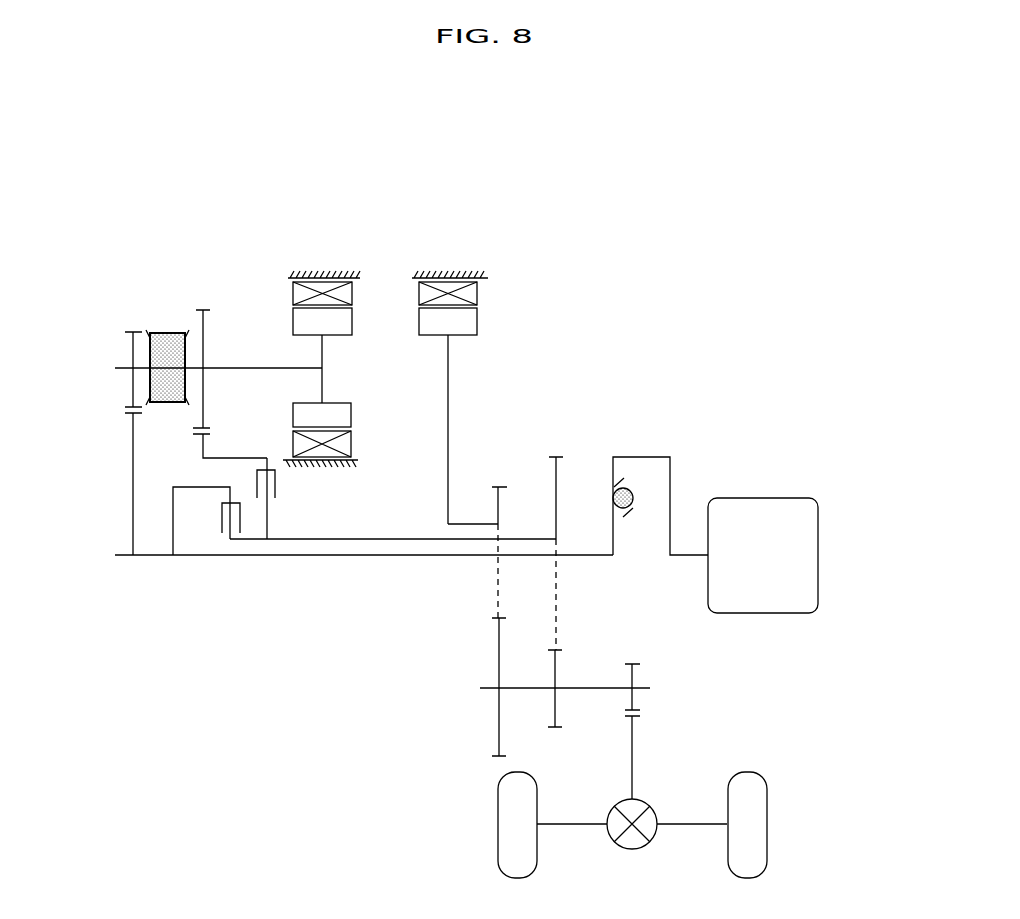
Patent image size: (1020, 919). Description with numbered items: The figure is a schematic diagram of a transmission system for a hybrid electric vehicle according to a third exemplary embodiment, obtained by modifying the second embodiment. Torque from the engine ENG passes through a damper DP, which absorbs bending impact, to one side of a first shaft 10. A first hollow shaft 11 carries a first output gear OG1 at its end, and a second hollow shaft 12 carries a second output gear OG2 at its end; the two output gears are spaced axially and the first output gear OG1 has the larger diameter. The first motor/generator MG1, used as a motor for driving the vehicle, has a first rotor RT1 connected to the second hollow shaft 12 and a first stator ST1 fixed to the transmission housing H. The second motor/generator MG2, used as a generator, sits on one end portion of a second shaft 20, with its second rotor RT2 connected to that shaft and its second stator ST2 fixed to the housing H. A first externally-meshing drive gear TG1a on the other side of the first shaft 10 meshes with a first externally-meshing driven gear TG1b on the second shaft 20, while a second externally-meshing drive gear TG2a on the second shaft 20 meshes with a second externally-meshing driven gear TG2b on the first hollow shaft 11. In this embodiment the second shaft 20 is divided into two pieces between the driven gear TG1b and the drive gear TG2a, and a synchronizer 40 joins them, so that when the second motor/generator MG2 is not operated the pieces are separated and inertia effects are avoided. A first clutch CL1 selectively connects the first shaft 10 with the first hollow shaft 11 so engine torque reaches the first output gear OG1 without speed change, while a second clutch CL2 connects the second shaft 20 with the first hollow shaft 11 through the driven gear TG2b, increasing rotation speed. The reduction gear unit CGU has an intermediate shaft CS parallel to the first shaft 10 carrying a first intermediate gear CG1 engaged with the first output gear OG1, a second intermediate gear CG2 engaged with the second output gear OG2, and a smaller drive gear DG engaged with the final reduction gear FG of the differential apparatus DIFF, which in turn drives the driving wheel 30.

The first shaft 10 is at (305, 559).
The first hollow shaft 11 is at (391, 542).
The second hollow shaft 12 is at (466, 527).
The second shaft 20 is at (140, 375).
The driving wheel 30 is at (497, 858).
The synchronizer 40 is at (160, 328).
The first externally-meshing drive gear TG1a is at (131, 530).
The first externally-meshing driven gear TG1b is at (131, 350).
The second externally-meshing drive gear TG2a is at (204, 352).
The second externally-meshing driven gear TG2b is at (203, 442).
The first motor/generator MG1 is at (491, 256).
The second motor/generator MG2 is at (300, 256).
The first stator ST1 is at (480, 290).
The second stator ST2 is at (292, 288).
The first rotor RT1 is at (478, 318).
The second rotor RT2 is at (292, 318).
The transmission housing H is at (333, 272).
The first clutch CL1 is at (213, 524).
The second clutch CL2 is at (284, 488).
The first output gear OG1 is at (557, 478).
The second output gear OG2 is at (497, 505).
The damper DP is at (631, 512).
The engine ENG is at (763, 555).
The reduction gear unit CGU is at (455, 694).
The intermediate shaft CS is at (520, 690).
The first intermediate gear CG1 is at (558, 663).
The second intermediate gear CG2 is at (497, 652).
The drive gear DG is at (633, 680).
The final reduction gear FG is at (633, 745).
The differential apparatus DIFF is at (654, 794).